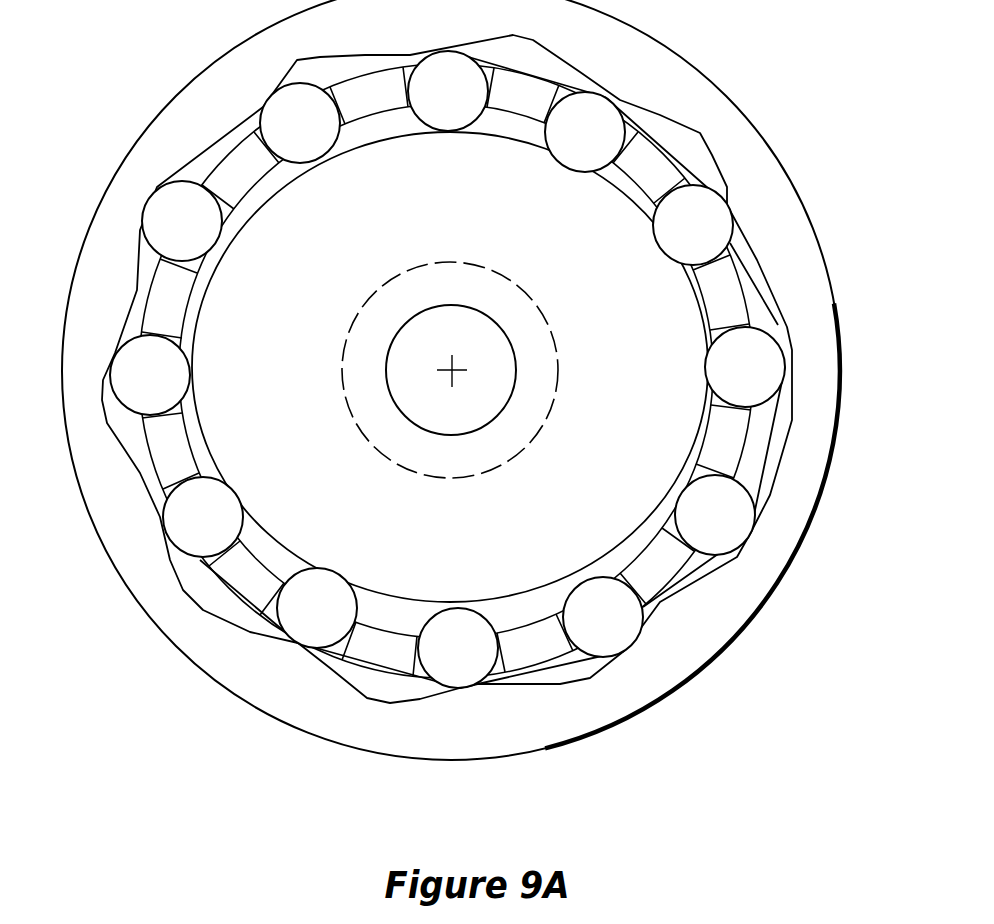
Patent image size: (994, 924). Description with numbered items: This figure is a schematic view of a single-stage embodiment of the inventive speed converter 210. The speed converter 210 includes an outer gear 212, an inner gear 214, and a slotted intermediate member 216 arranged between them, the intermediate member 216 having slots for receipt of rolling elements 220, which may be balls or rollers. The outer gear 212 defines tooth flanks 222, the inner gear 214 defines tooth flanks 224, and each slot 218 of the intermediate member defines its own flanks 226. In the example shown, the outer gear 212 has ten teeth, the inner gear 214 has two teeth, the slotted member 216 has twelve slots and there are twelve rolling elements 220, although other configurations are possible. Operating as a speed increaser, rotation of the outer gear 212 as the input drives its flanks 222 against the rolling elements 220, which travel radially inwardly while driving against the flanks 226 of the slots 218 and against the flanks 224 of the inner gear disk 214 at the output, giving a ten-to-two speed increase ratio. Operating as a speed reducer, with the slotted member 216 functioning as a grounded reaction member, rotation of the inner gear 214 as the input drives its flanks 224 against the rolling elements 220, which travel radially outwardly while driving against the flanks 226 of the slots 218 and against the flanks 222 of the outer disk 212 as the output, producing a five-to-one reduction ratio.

The speed converter 210 is at (476, 425).
The outer gear 212 is at (817, 443).
The inner gear 214 is at (430, 210).
The slotted intermediate member 216 is at (446, 439).
The slot 218 is at (420, 680).
The rolling elements 220 is at (463, 620).
The tooth flanks 222 is at (697, 580).
The tooth flanks 224 is at (647, 537).
The flanks 226 is at (712, 472).